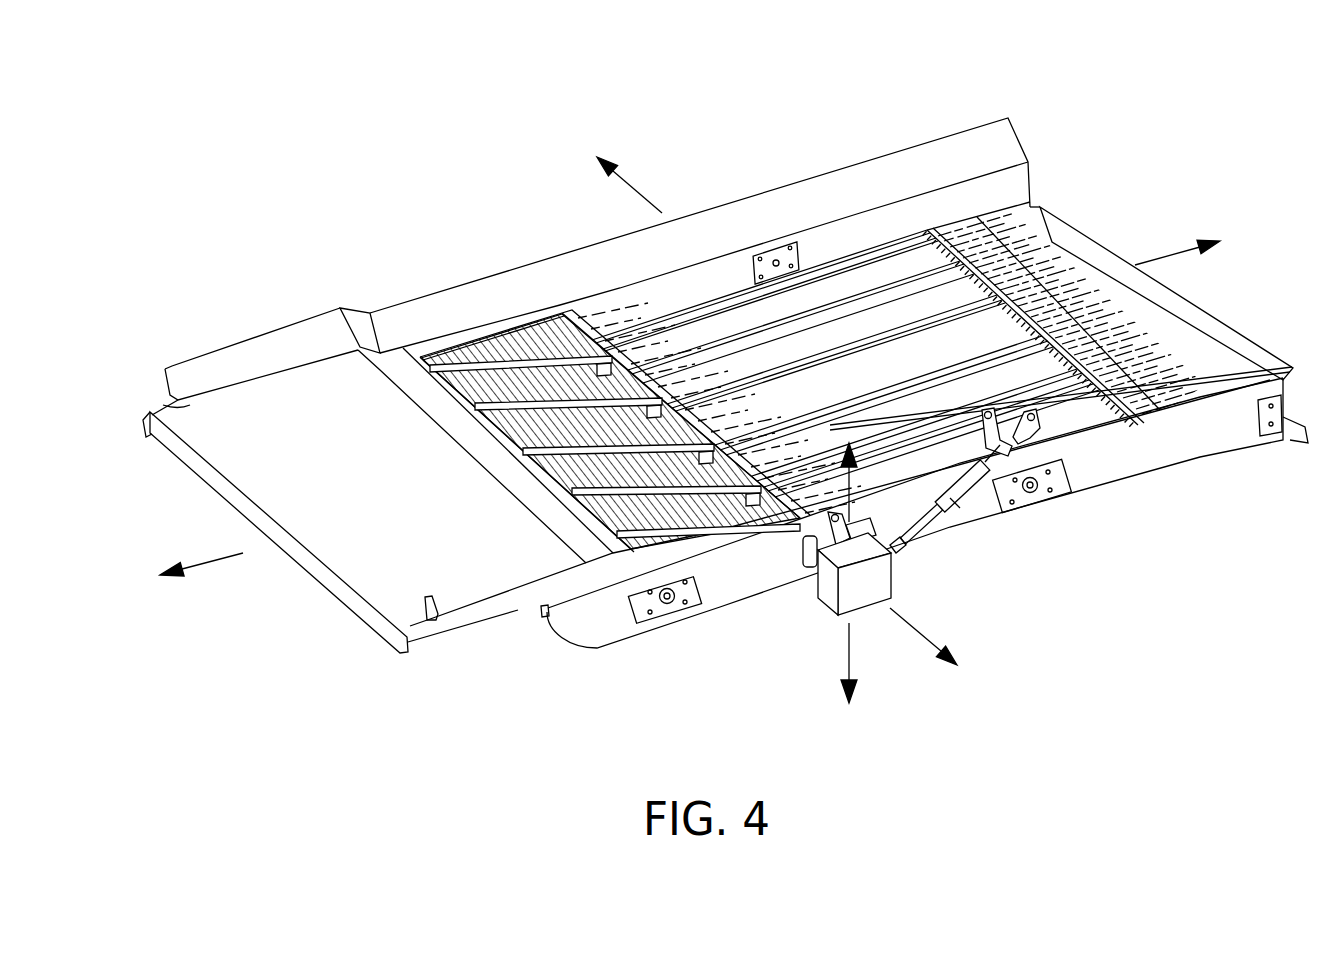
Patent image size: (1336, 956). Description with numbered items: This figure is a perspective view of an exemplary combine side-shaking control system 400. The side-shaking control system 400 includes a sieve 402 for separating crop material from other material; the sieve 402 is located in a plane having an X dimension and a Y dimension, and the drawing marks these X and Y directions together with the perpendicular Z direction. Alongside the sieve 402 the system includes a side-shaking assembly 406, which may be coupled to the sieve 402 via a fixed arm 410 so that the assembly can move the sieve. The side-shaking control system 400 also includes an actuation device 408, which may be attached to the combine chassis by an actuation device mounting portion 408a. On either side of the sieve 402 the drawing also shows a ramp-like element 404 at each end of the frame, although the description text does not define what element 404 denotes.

The combine side-shaking control system 400 is at (1138, 85).
The sieve 402 is at (1048, 275).
The ramp 404 is at (1167, 258).
The side-shaking assembly 406 is at (862, 601).
The actuation device 408 is at (950, 523).
The actuation device mounting portion 408a is at (1013, 442).
The fixed arm 410 is at (830, 532).